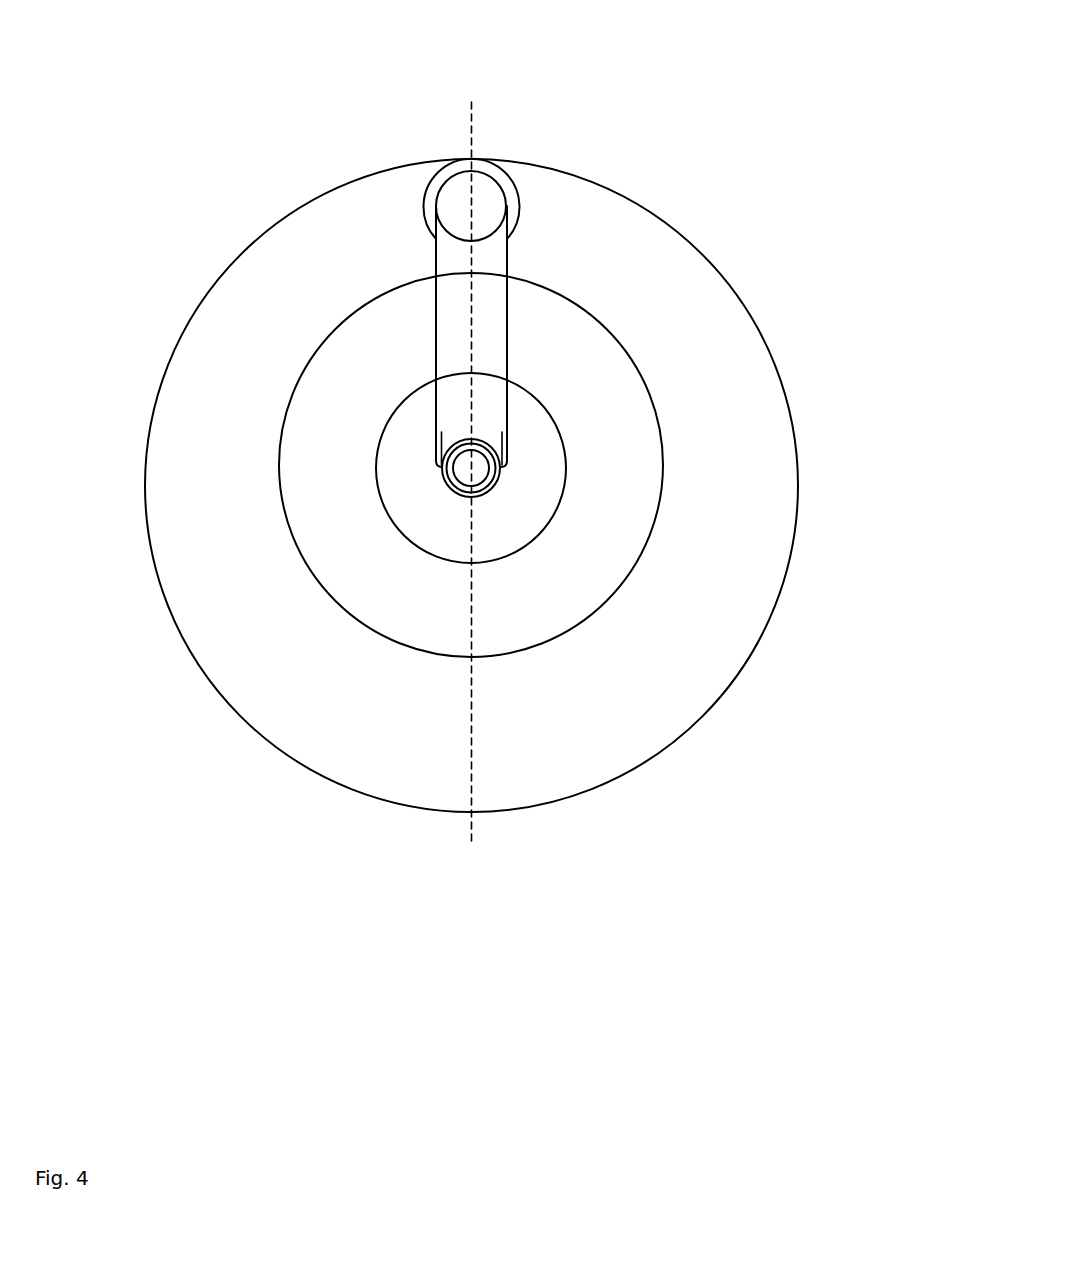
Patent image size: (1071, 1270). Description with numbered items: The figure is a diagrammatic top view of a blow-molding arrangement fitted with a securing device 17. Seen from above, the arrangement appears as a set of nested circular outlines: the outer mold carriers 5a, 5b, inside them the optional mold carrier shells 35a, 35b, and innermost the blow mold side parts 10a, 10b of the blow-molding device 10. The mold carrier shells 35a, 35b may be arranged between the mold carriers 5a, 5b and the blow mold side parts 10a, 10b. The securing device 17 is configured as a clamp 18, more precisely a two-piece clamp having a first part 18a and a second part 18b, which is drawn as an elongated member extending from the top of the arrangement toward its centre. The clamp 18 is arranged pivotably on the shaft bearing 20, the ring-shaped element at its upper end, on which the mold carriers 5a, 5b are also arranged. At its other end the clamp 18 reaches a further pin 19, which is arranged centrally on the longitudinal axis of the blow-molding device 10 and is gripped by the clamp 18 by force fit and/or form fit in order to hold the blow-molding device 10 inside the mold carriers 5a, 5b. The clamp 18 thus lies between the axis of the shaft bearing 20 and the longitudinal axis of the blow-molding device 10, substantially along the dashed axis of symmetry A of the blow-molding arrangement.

The securing device 17 is at (668, 77).
The clamp 18 is at (475, 294).
The first part 18a is at (509, 267).
The second part 18b is at (433, 265).
The pin 19 is at (477, 463).
The shaft bearing 20 is at (433, 191).
The blow-molding device 10 is at (610, 560).
The blow mold side part 10a is at (550, 462).
The blow mold side part 10b is at (445, 540).
The mold carrier shell 35a is at (587, 600).
The mold carrier shell 35b is at (355, 600).
The mold carrier 5a is at (783, 518).
The mold carrier 5b is at (156, 518).
The axis of symmetry A is at (471, 830).